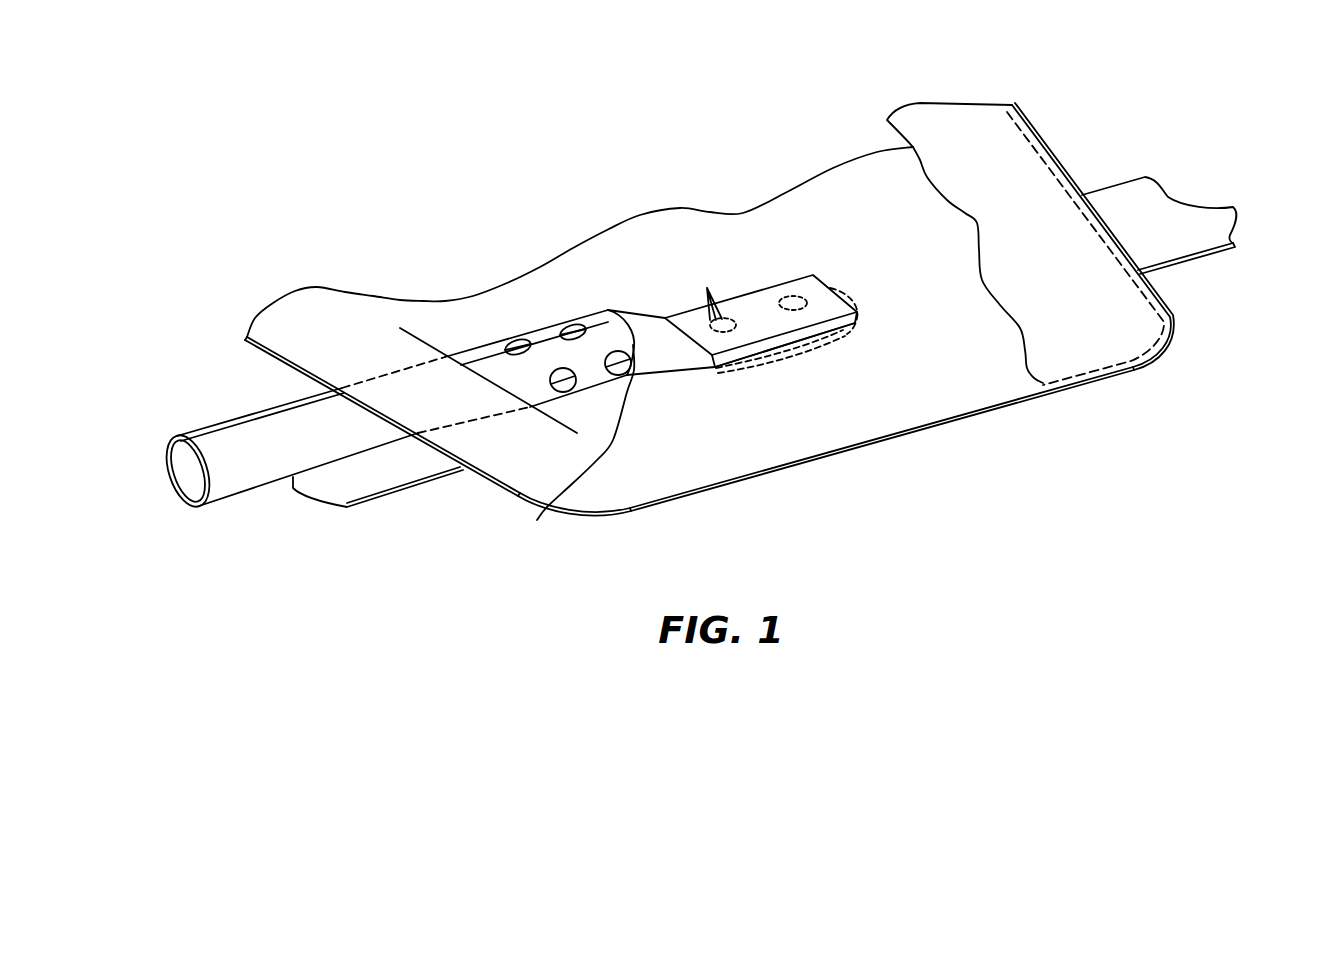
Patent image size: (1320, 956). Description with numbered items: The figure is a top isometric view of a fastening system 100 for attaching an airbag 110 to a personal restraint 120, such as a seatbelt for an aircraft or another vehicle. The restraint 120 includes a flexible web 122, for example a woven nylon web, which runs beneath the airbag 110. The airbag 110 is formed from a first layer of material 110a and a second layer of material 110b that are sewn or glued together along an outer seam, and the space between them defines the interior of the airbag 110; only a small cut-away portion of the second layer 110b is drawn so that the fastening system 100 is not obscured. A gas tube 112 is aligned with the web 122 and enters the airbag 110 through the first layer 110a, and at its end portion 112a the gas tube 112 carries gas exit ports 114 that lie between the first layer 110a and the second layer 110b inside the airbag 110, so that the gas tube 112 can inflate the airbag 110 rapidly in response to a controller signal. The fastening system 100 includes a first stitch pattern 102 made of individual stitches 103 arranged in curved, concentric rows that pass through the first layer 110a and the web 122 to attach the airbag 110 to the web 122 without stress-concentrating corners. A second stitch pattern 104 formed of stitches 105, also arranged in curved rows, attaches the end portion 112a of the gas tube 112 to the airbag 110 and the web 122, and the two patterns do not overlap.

The fastening system 100 is at (483, 189).
The first stitch pattern 102 is at (777, 357).
The stitches 103 is at (833, 338).
The second stitch pattern 104 is at (723, 322).
The stitches 105 is at (707, 288).
The airbag 110 is at (706, 506).
The first layer of material 110a is at (343, 310).
The second layer of material 110b is at (1027, 128).
The gas tube 112 is at (240, 478).
The end portion 112a is at (807, 285).
The gas exit ports 114 is at (567, 388).
The personal restraint 120 is at (1187, 274).
The flexible web 122 is at (400, 477).